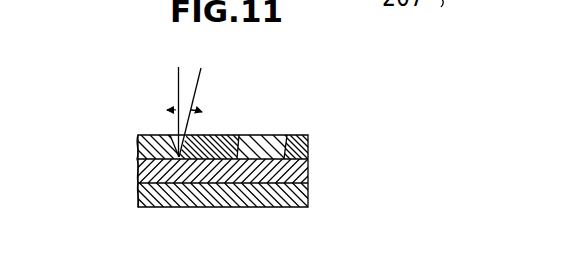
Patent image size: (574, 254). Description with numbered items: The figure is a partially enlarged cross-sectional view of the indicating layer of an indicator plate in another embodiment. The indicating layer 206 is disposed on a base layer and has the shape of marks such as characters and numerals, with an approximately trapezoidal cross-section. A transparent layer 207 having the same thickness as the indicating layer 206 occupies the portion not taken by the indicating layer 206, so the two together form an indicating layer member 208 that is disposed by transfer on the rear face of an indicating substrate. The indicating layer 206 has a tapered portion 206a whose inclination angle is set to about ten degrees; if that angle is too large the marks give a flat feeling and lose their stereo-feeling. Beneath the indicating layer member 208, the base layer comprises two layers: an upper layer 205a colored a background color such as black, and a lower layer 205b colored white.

The upper layer 205a is at (310, 176).
The lower layer 205b is at (310, 193).
The indicating layer 206 is at (221, 134).
The tapered portion 206a is at (175, 142).
The transparent layer 207 is at (267, 143).
The indicating layer member 208 is at (134, 177).